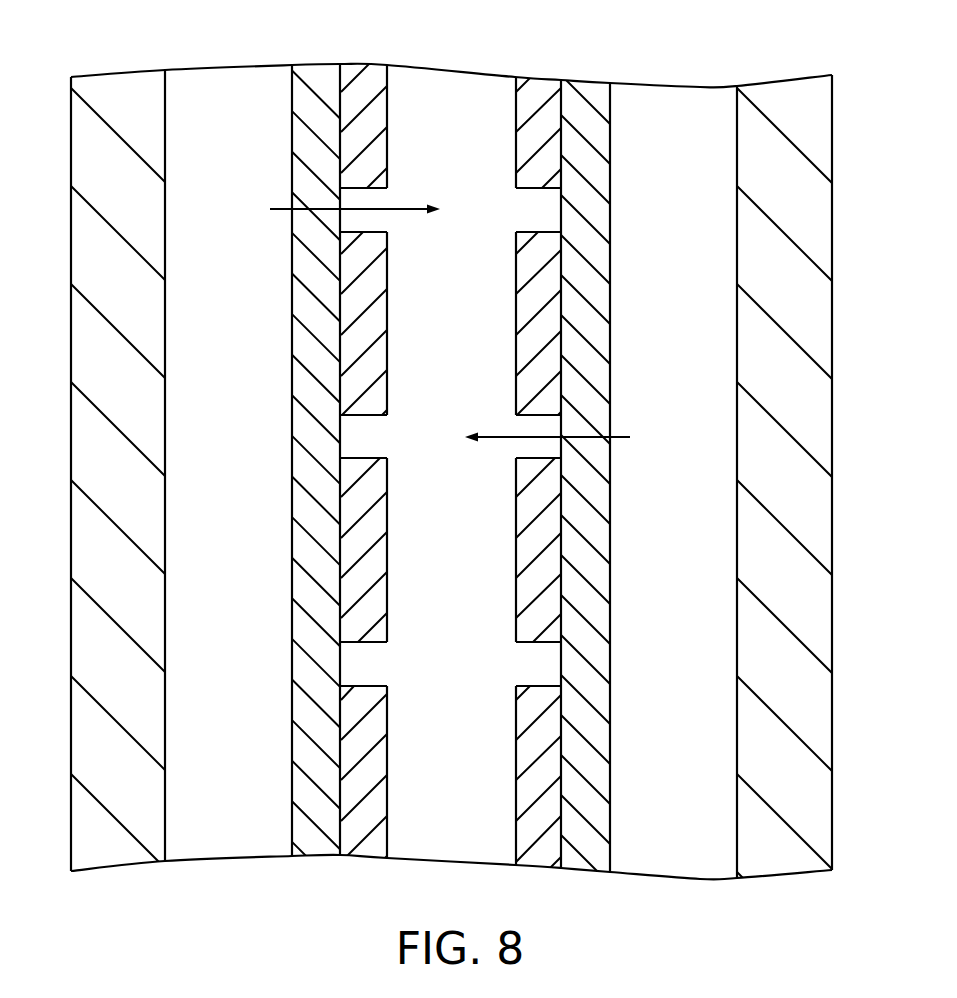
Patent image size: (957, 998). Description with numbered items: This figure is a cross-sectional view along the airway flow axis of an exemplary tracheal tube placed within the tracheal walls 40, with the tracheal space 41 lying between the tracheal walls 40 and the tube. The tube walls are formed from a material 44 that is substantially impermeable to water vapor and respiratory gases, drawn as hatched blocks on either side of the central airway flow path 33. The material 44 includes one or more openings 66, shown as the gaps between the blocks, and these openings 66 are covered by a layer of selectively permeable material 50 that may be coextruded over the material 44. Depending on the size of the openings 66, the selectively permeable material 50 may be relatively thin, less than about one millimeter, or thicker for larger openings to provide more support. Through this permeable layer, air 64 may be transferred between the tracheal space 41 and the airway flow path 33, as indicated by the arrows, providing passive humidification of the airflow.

The tracheal walls 40 is at (83, 117).
The tracheal space 41 is at (215, 450).
The substantially impermeable material 44 is at (522, 110).
The selectively permeable material 50 is at (303, 147).
The air 64 is at (289, 207).
The openings 66 is at (378, 433).
The airway flow path 33 is at (437, 560).